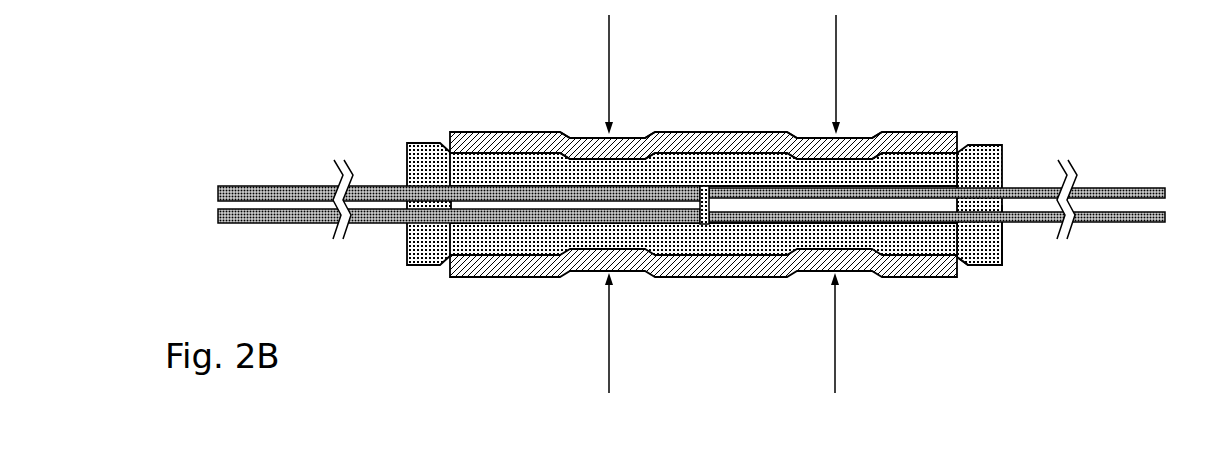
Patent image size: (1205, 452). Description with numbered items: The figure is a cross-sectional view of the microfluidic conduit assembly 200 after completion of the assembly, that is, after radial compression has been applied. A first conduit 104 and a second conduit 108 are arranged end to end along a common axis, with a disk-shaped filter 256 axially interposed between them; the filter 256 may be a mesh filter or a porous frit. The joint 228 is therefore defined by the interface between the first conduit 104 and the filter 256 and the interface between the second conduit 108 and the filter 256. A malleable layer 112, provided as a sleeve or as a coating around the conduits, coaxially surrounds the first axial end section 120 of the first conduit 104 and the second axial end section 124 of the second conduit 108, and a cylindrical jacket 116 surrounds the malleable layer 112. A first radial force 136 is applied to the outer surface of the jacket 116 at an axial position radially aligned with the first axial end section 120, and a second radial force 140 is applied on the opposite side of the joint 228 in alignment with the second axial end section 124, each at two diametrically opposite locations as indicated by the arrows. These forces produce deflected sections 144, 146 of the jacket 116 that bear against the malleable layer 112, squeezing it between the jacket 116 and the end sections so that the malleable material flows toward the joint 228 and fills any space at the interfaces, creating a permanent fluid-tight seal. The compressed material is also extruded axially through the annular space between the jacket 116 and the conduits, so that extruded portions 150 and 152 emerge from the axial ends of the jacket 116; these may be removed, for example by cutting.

The microfluidic conduit assembly 200 is at (332, 110).
The first conduit 104 is at (1035, 185).
The second conduit 108 is at (370, 185).
The malleable layer 112 is at (1002, 162).
The jacket 116 is at (958, 138).
The first axial end section 120 is at (917, 185).
The second axial end section 124 is at (499, 187).
The first radial force 136 is at (838, 62).
The second radial force 140 is at (611, 62).
The deflected section 144 is at (812, 133).
The deflected section 146 is at (582, 133).
The extruded portion 150 is at (983, 268).
The extruded portion 152 is at (425, 267).
The joint 228 is at (714, 150).
The filter 256 is at (706, 224).